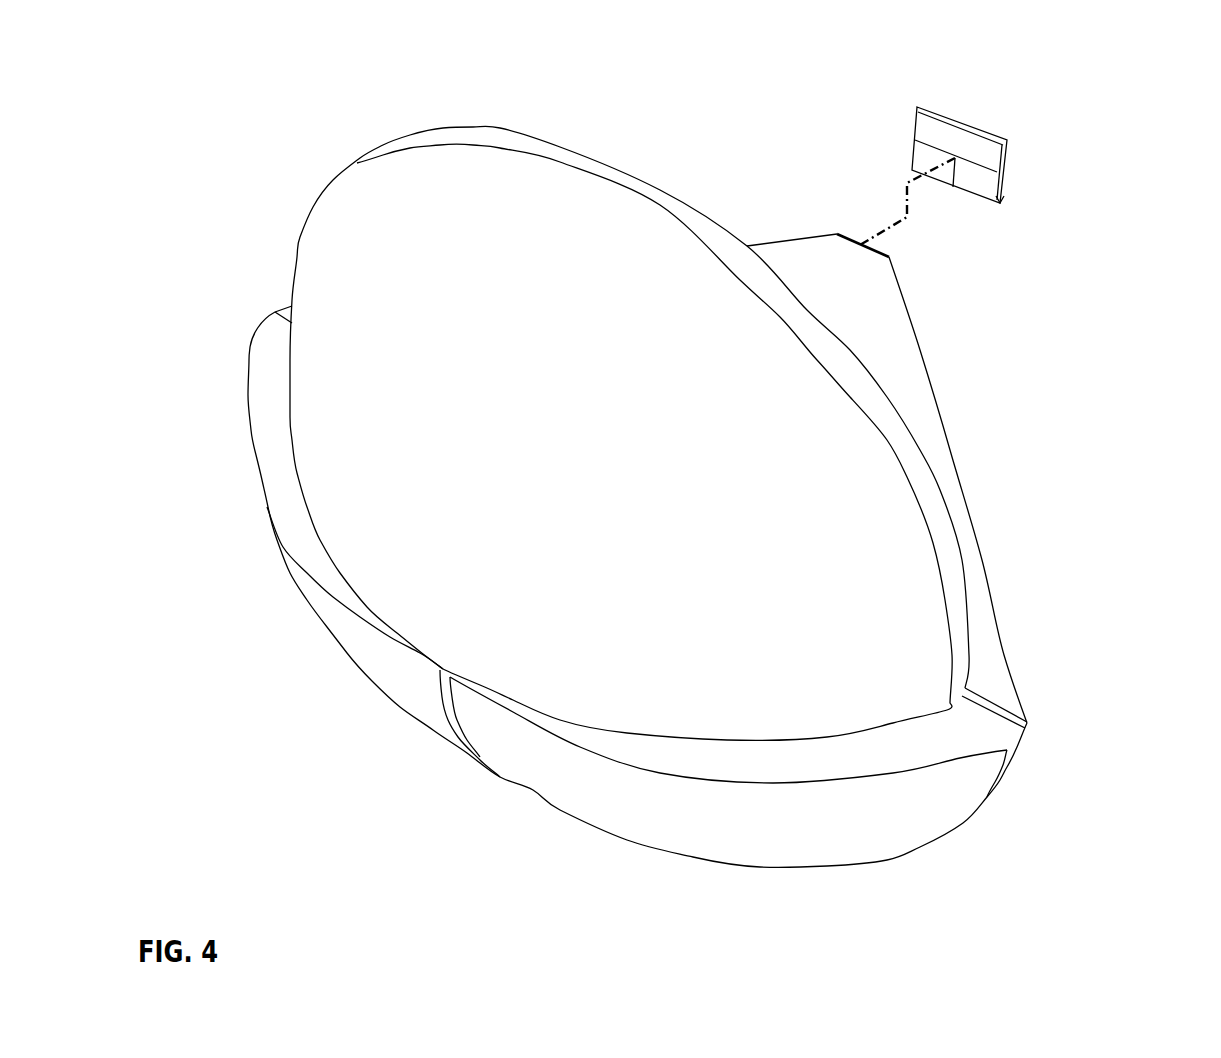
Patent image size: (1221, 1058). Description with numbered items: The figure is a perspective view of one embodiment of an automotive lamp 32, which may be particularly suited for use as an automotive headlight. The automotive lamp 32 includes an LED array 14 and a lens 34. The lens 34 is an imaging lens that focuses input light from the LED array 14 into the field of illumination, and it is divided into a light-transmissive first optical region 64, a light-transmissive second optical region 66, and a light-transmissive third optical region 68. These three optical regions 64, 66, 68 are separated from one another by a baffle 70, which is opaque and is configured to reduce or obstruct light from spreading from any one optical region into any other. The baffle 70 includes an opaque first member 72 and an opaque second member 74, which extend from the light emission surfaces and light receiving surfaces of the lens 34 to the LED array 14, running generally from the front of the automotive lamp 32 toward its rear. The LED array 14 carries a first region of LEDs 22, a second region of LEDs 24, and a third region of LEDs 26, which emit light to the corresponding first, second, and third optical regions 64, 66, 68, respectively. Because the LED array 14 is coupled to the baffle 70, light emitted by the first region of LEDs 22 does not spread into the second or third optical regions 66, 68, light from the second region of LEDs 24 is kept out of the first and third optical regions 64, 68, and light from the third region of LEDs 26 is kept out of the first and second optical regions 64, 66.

The LED array 14 is at (982, 114).
The first region of LEDs 22 is at (928, 127).
The second region of LEDs 24 is at (990, 200).
The third region of LEDs 26 is at (920, 160).
The automotive lamp 32 is at (1198, 64).
The lens 34 is at (678, 154).
The light-transmissive first optical region 64 is at (340, 247).
The light-transmissive second optical region 66 is at (770, 848).
The light-transmissive third optical region 68 is at (370, 687).
The baffle 70 is at (984, 422).
The opaque first member 72 is at (876, 314).
The opaque second member 74 is at (445, 718).